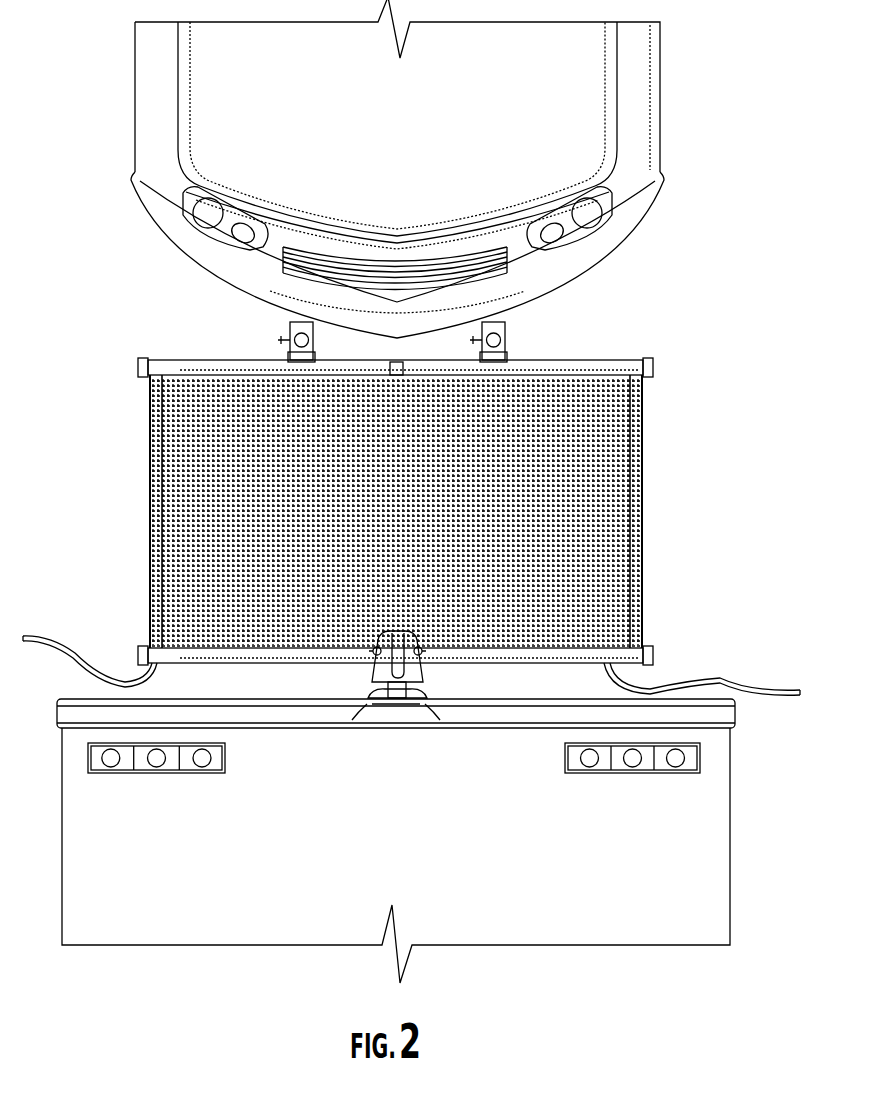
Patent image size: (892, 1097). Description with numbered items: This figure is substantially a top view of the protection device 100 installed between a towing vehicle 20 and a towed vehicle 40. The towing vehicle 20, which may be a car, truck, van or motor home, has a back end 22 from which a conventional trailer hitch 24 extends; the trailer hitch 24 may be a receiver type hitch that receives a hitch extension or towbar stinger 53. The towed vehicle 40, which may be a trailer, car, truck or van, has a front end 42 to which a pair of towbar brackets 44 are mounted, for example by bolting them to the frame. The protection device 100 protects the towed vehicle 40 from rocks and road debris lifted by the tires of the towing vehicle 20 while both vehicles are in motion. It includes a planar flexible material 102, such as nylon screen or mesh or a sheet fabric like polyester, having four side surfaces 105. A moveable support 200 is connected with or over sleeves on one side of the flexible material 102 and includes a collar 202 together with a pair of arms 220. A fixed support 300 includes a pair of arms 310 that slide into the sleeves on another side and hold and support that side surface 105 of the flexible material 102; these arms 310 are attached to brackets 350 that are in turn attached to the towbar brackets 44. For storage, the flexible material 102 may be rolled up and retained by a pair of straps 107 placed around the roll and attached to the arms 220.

The towing vehicle 20 is at (744, 777).
The back end 22 is at (735, 699).
The trailer hitch 24 is at (415, 705).
The towed vehicle 40 is at (668, 107).
The front end 42 is at (666, 220).
The towbar brackets 44 is at (290, 332).
The towbar stinger 53 is at (375, 706).
The protection device 100 is at (658, 504).
The flexible material 102 is at (649, 437).
The side surfaces 105 is at (649, 553).
The straps 107 is at (77, 640).
The moveable support 200 is at (666, 654).
The collar 202 is at (425, 678).
The arms 220 is at (183, 665).
The fixed support 300 is at (666, 368).
The arms 310 is at (597, 350).
The brackets 350 is at (290, 352).